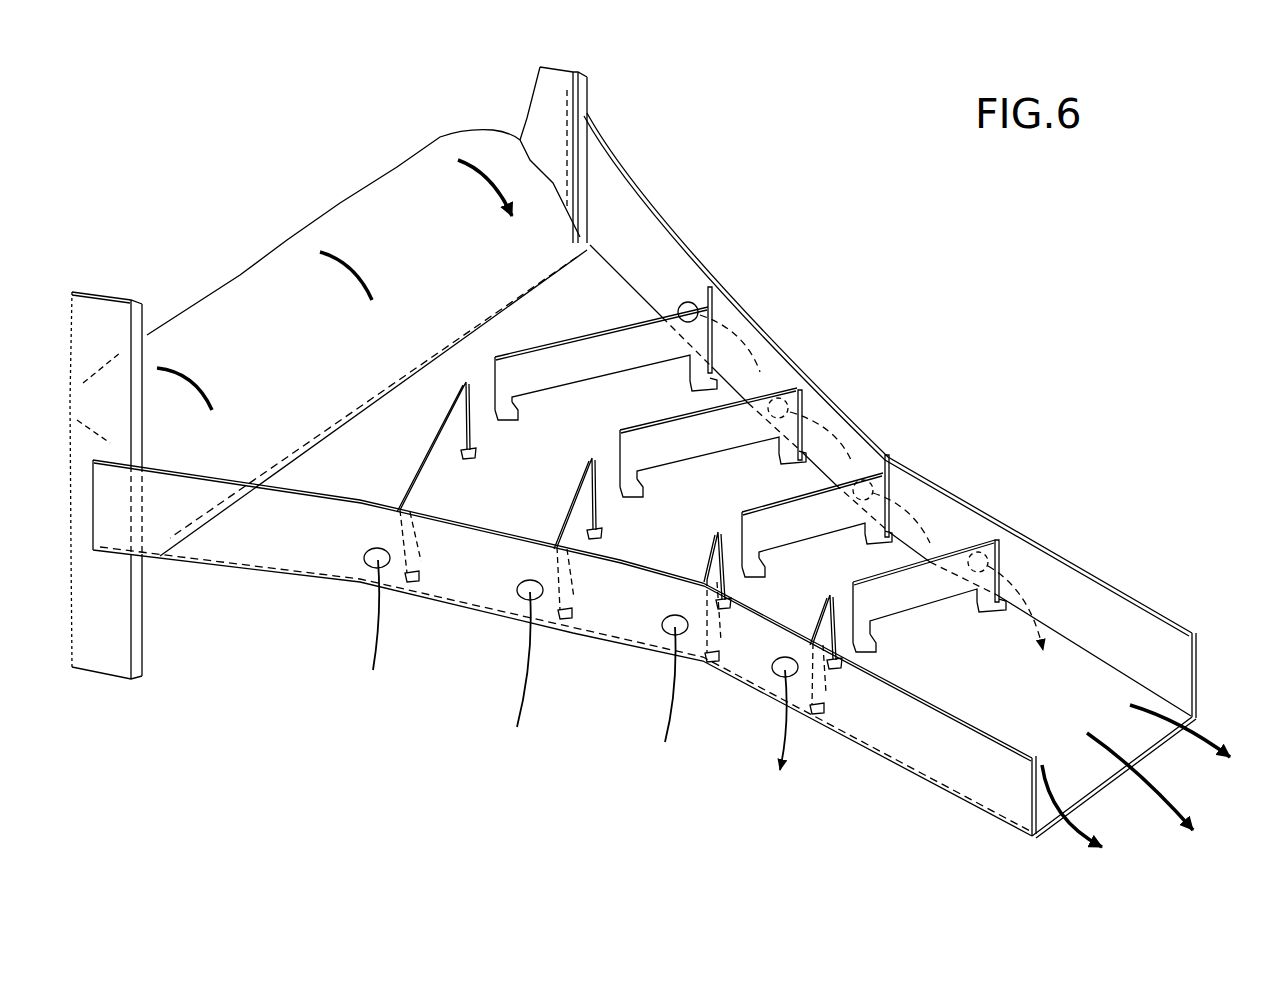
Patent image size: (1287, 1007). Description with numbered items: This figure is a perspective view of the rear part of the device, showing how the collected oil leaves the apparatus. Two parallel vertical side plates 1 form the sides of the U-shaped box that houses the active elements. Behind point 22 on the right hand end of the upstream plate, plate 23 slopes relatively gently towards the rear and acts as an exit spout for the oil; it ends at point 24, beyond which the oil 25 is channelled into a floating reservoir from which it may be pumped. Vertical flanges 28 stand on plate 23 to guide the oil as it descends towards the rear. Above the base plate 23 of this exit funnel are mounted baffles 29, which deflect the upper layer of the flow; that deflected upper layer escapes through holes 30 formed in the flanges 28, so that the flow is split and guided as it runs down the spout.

The side plate 1 is at (134, 294).
The point 22 is at (498, 131).
The plate 23 is at (378, 476).
The point 24 is at (1181, 689).
The oil 25 is at (1166, 786).
The vertical flange 28 is at (665, 204).
The baffle 29 is at (590, 458).
The hole 30 is at (688, 302).